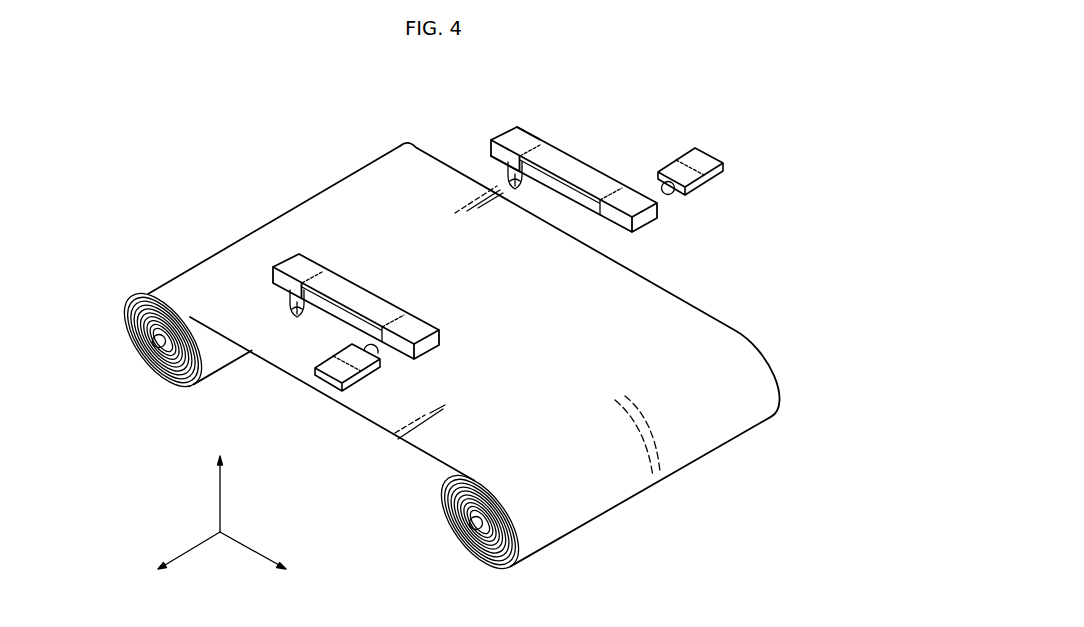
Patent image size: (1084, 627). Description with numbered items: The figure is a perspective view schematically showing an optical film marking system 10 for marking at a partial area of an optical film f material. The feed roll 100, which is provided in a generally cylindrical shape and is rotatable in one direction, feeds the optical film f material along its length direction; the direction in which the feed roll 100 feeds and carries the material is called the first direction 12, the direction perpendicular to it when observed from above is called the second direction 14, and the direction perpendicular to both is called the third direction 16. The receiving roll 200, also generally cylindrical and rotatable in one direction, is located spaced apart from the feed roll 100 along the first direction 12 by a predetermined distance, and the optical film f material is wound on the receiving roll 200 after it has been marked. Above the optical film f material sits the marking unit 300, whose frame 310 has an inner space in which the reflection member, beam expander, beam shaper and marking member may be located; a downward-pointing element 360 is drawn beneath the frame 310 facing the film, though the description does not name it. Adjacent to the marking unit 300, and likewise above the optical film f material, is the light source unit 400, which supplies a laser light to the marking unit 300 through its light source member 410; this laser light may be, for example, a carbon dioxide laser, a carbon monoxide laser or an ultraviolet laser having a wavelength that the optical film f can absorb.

The optical film marking system 10 is at (246, 98).
The first direction 12 is at (264, 559).
The second direction 14 is at (175, 559).
The third direction 16 is at (222, 481).
The feed roll 100 is at (155, 346).
The receiving roll 200 is at (472, 528).
The marking unit 300 is at (465, 223).
The frame 310 is at (510, 134).
The nozzle 360 is at (513, 190).
The light source unit 400 is at (714, 154).
The light source member 410 is at (693, 158).
The optical film f is at (657, 298).